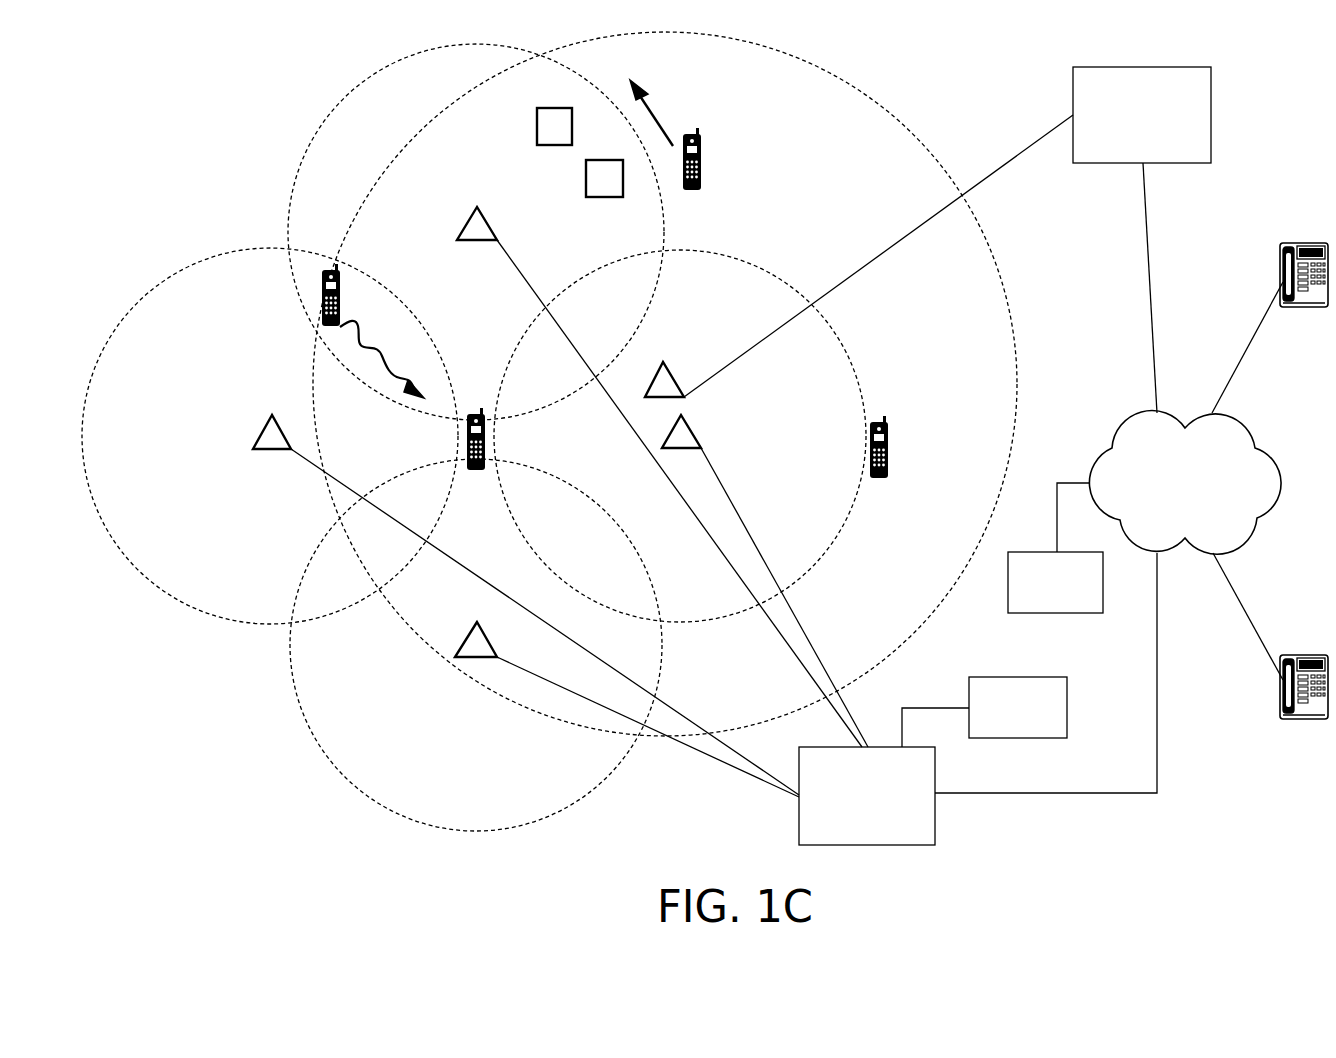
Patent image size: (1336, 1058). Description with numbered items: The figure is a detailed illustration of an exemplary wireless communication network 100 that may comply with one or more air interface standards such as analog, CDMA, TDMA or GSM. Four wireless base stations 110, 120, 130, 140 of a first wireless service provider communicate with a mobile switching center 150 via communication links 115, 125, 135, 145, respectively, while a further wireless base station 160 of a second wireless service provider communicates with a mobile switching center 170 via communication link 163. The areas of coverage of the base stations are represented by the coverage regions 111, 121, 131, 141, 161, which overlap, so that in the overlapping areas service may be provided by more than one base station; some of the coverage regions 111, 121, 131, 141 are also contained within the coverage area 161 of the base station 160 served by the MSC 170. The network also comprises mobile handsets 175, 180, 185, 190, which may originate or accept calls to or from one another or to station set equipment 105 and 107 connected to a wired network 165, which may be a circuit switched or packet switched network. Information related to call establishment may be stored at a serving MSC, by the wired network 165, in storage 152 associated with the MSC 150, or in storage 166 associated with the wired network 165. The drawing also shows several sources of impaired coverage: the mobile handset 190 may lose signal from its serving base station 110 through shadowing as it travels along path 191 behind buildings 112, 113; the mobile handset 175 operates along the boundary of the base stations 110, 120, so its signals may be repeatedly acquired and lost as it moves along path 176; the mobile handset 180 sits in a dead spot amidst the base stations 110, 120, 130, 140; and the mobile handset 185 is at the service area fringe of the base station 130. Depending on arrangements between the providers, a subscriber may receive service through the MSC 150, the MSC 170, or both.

The wireless communication network 100 is at (175, 106).
The station set equipment 105 is at (1280, 250).
The station set equipment 107 is at (1280, 680).
The wireless base station 110 is at (470, 223).
The coverage region 111 is at (373, 73).
The building 112 is at (586, 174).
The building 113 is at (536, 112).
The communication link 115 is at (795, 652).
The wireless base station 120 is at (266, 430).
The coverage region 121 is at (213, 255).
The communication link 125 is at (678, 712).
The wireless base station 130 is at (690, 420).
The coverage region 131 is at (741, 254).
The communication link 135 is at (808, 638).
The wireless base station 140 is at (474, 626).
The coverage region 141 is at (322, 752).
The communication link 145 is at (715, 757).
The mobile switching center 150 is at (867, 796).
The storage 152 is at (984, 712).
The wireless base station 160 is at (665, 362).
The coverage area 161 is at (903, 124).
The communication link 163 is at (1018, 156).
The wired network 165 is at (1108, 478).
The storage 166 is at (1055, 548).
The mobile switching center 170 is at (1142, 115).
The mobile handset 175 is at (322, 300).
The path 176 is at (378, 357).
The mobile handset 180 is at (478, 472).
The mobile handset 185 is at (885, 410).
The mobile handset 190 is at (700, 153).
The path 191 is at (653, 105).